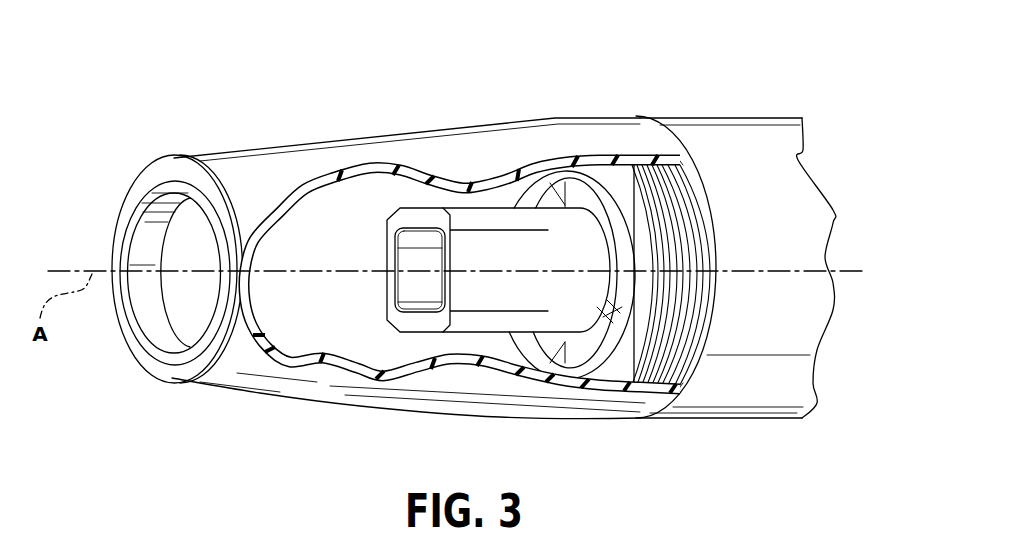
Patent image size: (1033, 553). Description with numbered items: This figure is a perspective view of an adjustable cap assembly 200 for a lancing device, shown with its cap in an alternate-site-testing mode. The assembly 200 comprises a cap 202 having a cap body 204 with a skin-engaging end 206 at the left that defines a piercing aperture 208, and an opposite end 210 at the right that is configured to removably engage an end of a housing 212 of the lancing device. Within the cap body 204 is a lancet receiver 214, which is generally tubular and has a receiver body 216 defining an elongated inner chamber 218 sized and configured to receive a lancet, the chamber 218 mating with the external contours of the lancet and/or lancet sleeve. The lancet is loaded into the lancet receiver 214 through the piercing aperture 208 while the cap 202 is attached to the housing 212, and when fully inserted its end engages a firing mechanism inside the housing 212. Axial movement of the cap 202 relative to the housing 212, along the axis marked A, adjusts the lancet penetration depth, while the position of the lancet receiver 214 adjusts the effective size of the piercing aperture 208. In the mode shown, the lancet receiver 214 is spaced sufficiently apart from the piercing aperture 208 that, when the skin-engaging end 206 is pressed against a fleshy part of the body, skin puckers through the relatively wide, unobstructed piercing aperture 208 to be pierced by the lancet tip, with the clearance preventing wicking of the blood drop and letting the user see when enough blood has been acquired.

The assembly 200 is at (542, 93).
The cap 202 is at (467, 122).
The cap body 204 is at (352, 155).
The skin-engaging end 206 is at (150, 363).
The piercing aperture 208 is at (175, 242).
The end opposite the skin-engaging end 210 is at (593, 410).
The housing 212 is at (740, 160).
The lancet receiver 214 is at (485, 193).
The receiver body 216 is at (487, 297).
The elongated inner chamber 218 is at (410, 285).